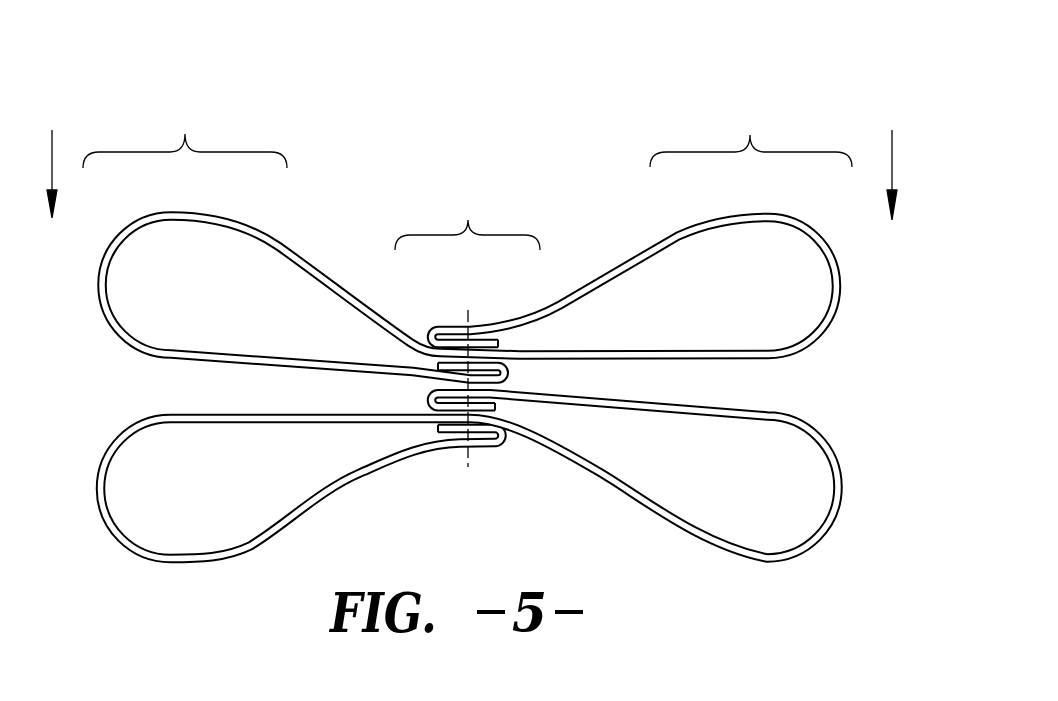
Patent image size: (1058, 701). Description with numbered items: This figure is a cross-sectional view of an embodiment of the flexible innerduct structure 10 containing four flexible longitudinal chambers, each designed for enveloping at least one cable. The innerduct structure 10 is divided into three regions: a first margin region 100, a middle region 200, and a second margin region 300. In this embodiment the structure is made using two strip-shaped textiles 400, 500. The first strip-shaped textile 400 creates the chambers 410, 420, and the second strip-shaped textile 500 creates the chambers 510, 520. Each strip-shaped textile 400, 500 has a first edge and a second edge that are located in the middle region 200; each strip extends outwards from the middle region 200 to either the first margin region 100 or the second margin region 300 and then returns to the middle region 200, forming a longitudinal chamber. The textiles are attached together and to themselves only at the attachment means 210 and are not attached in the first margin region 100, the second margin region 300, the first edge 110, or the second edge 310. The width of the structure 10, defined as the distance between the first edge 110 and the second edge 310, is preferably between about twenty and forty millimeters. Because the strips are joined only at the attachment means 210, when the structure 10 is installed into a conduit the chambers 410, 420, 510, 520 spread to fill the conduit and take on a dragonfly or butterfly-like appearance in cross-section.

The innerduct structure 10 is at (302, 87).
The first margin region 100 is at (185, 133).
The first edge 110 is at (53, 156).
The middle region 200 is at (467, 217).
The attachment means 210 is at (457, 459).
The second margin region 300 is at (751, 134).
The second edge 310 is at (892, 155).
The strip-shaped textile 400 is at (840, 295).
The flexible longitudinal chamber 410 is at (777, 297).
The flexible longitudinal chamber 420 is at (215, 297).
The strip-shaped textile 500 is at (840, 507).
The flexible longitudinal chamber 510 is at (776, 502).
The flexible longitudinal chamber 520 is at (222, 503).